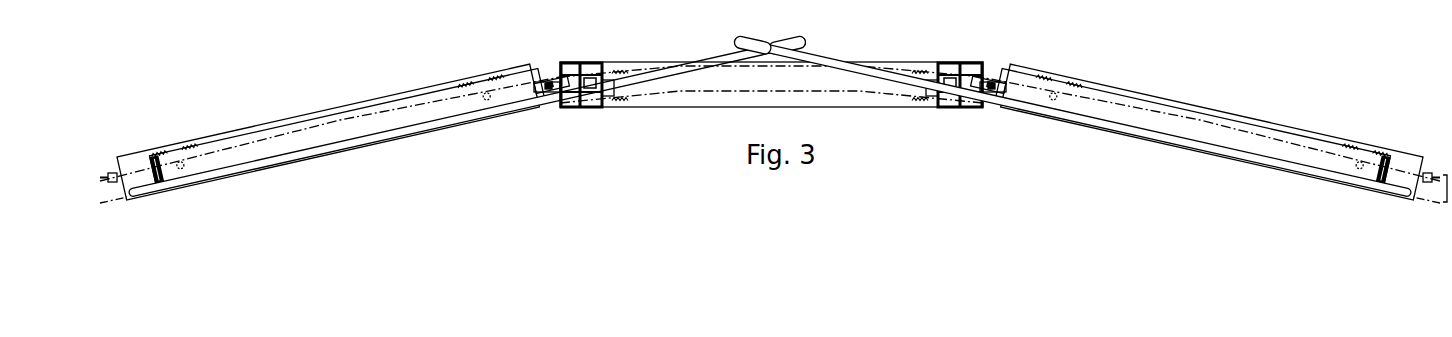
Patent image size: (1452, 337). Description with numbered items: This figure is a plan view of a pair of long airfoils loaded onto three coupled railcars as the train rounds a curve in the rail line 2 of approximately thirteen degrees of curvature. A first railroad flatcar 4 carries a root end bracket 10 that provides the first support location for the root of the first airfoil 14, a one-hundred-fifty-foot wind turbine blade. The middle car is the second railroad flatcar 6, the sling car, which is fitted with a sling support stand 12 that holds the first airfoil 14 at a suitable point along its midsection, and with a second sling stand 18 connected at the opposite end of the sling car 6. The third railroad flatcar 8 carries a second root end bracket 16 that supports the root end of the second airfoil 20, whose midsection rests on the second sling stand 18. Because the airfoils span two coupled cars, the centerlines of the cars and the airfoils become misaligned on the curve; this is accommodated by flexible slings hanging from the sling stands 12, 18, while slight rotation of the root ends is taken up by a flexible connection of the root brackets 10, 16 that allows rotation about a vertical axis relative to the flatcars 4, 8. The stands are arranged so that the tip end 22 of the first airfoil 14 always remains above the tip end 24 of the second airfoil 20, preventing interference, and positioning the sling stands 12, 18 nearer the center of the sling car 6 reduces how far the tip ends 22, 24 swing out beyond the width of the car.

The rail line 2 is at (1447, 200).
The first railroad flatcar 4 is at (397, 143).
The second railroad flatcar 6 is at (712, 108).
The third railroad flatcar 8 is at (1198, 153).
The root end bracket 10 is at (147, 178).
The sling support stand 12 is at (595, 62).
The first airfoil 14 is at (336, 128).
The second root end bracket 16 is at (1403, 165).
The second sling stand 18 is at (957, 63).
The second airfoil 20 is at (1137, 115).
The tip end of the first airfoil 22 is at (804, 43).
The tip end of the second airfoil 24 is at (740, 43).